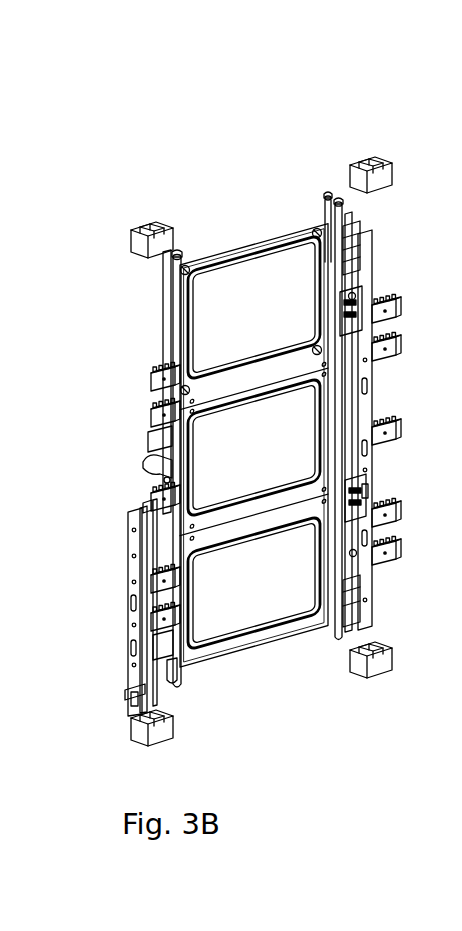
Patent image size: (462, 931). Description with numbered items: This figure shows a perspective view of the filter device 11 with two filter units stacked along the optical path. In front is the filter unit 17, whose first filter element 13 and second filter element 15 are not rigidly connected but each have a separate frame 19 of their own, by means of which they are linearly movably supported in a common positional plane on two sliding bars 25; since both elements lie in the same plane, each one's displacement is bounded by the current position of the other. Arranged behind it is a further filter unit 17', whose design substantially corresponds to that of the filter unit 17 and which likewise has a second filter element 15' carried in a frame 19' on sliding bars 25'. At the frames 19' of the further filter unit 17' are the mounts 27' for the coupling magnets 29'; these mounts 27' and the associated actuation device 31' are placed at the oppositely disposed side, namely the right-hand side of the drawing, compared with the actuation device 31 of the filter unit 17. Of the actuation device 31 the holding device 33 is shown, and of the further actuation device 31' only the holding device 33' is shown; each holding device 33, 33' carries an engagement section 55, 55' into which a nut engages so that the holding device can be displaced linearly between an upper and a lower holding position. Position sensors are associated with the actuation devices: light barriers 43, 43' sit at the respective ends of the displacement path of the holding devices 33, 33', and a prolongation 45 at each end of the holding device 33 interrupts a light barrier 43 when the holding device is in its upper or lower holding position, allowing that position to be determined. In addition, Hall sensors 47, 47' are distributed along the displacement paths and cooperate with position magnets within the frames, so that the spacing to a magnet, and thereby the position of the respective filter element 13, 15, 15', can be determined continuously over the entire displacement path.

The filter device 11 is at (148, 133).
The first filter element 13 is at (268, 597).
The second filter element 15 is at (254, 447).
The second filter element of the further filter unit 15' is at (254, 307).
The filter unit 17 is at (254, 399).
The further filter unit 17' is at (254, 270).
The frame 19 is at (254, 582).
The frame of the further filter unit 19' is at (258, 296).
The sliding bars 25 is at (259, 399).
The sliding bars of the further filter unit 25' is at (310, 183).
The mounts 27' is at (378, 427).
The coupling magnets 29' is at (376, 426).
The actuation device 31 is at (142, 423).
The actuation device of the further filter unit 31' is at (364, 355).
The holding device 33 is at (112, 612).
The holding device of the further filter unit 33' is at (402, 430).
The light barriers 43 is at (183, 474).
The light barriers of the further filter unit 43' is at (398, 431).
The prolongation 45 is at (150, 503).
The Hall sensors 47 is at (131, 523).
The Hall sensors of the further filter unit 47' is at (415, 421).
The engagement section 55 is at (101, 708).
The engagement section of the further holding device 55' is at (412, 477).